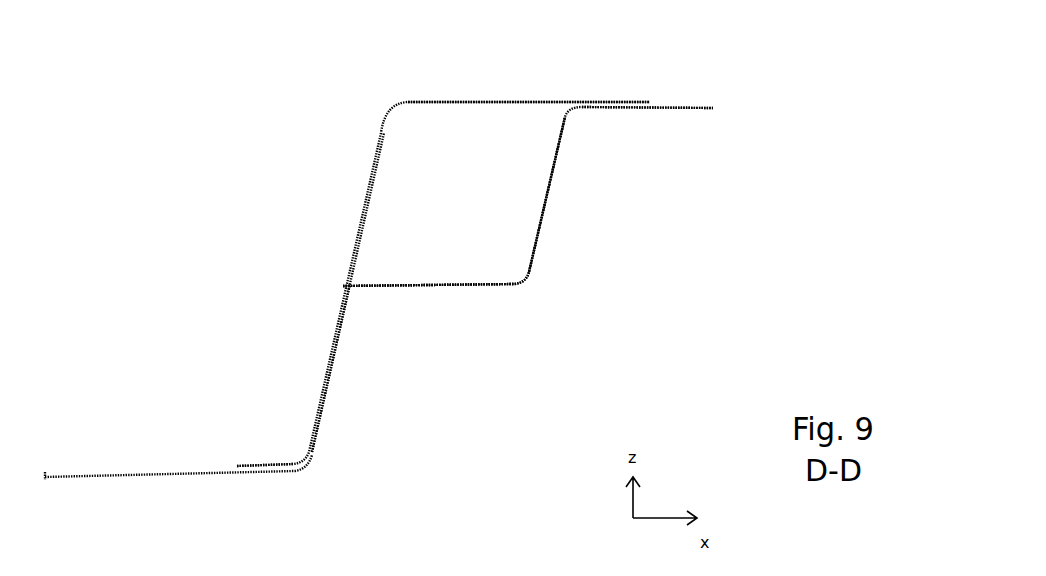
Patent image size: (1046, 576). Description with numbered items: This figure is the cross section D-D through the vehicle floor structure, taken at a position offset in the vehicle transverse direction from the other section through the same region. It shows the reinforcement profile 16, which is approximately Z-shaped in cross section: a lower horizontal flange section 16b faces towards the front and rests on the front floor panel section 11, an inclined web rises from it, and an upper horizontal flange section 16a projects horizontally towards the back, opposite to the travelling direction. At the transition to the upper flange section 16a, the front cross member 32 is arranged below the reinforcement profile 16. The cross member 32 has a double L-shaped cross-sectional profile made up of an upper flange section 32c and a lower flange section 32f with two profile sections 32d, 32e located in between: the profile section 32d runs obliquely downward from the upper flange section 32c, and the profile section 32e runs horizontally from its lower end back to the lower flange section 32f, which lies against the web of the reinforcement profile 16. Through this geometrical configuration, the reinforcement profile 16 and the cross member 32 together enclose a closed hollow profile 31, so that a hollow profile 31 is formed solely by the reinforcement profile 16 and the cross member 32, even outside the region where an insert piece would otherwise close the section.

The front floor panel section 11 is at (175, 470).
The reinforcement profile 16 is at (374, 162).
The upper horizontal flange section 16a is at (471, 98).
The lower horizontal flange section 16b is at (267, 462).
The hollow profile 31 is at (468, 196).
The front cross member 32 is at (530, 267).
The upper flange section 32c is at (616, 108).
The profile section 32d is at (545, 220).
The profile section 32e is at (455, 281).
The lower flange section 32f is at (335, 338).